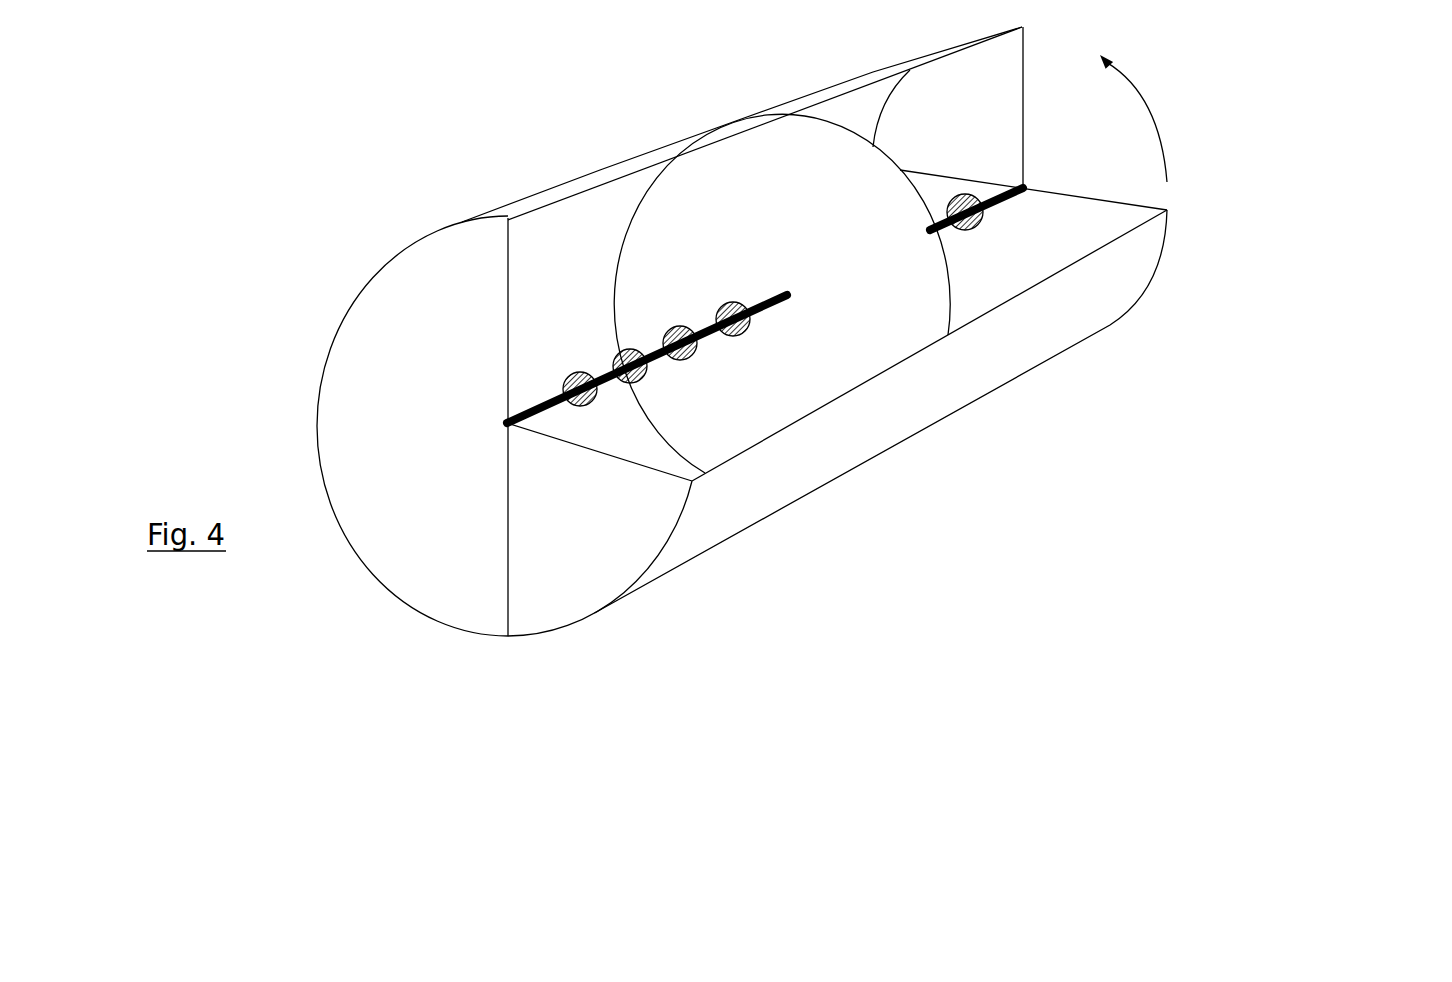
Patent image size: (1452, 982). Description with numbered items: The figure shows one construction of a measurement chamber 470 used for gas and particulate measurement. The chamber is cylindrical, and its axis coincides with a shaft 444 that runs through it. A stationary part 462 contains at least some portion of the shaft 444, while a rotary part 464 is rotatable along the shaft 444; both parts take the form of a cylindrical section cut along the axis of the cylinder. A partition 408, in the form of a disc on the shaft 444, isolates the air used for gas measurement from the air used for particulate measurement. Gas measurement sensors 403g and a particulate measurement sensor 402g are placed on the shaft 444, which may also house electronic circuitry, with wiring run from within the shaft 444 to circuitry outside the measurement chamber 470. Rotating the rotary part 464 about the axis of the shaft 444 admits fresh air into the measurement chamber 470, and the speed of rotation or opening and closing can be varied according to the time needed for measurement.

The measurement chamber 470 is at (730, 116).
The stationary part 462 is at (351, 435).
The rotary part 464 is at (582, 557).
The partition 408 is at (922, 310).
The shaft 444 is at (521, 386).
The gas measurement sensors 403g is at (700, 358).
The particulate measurement sensor 402g is at (981, 199).